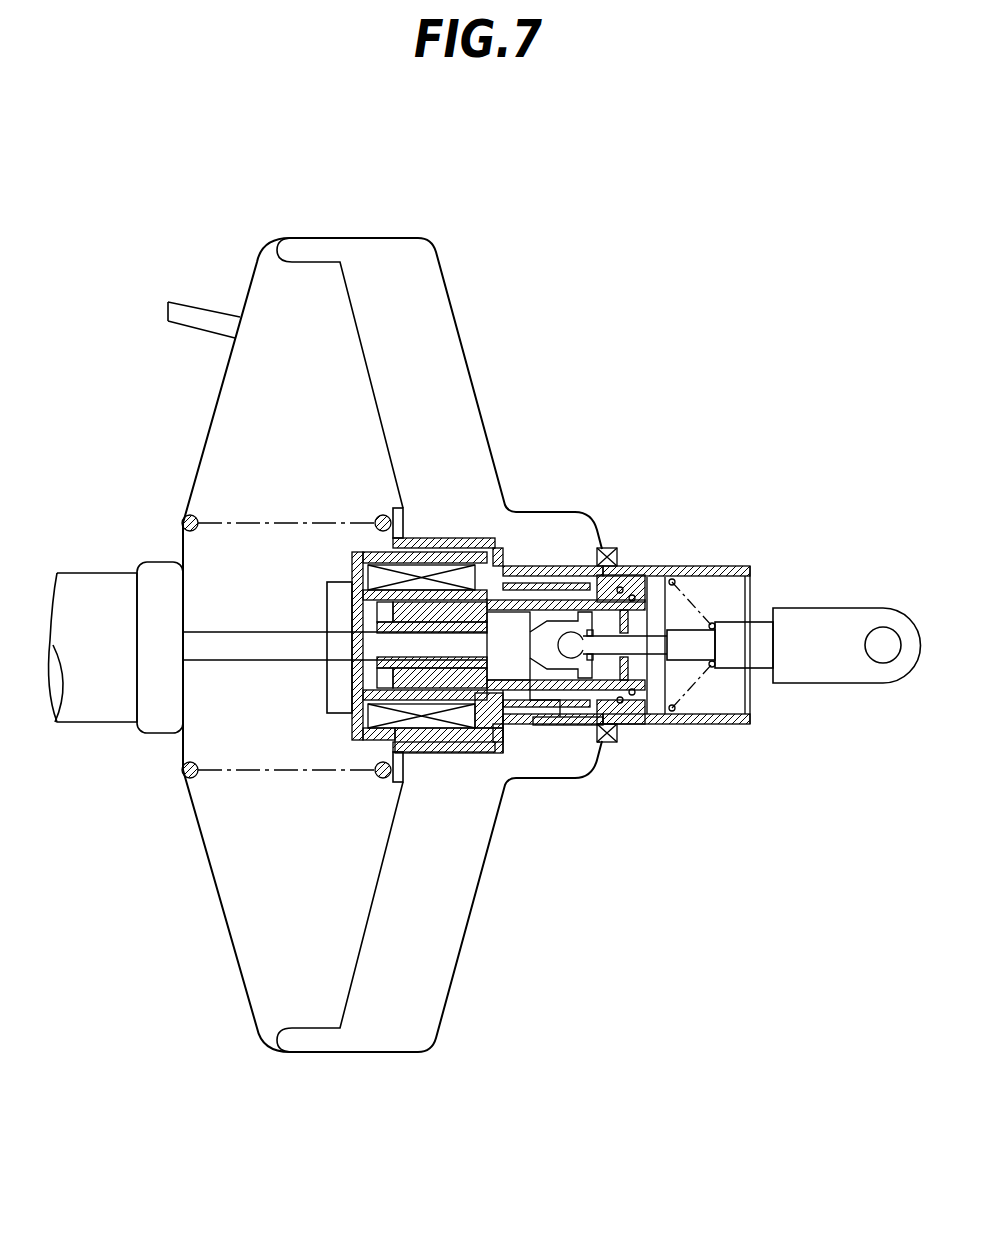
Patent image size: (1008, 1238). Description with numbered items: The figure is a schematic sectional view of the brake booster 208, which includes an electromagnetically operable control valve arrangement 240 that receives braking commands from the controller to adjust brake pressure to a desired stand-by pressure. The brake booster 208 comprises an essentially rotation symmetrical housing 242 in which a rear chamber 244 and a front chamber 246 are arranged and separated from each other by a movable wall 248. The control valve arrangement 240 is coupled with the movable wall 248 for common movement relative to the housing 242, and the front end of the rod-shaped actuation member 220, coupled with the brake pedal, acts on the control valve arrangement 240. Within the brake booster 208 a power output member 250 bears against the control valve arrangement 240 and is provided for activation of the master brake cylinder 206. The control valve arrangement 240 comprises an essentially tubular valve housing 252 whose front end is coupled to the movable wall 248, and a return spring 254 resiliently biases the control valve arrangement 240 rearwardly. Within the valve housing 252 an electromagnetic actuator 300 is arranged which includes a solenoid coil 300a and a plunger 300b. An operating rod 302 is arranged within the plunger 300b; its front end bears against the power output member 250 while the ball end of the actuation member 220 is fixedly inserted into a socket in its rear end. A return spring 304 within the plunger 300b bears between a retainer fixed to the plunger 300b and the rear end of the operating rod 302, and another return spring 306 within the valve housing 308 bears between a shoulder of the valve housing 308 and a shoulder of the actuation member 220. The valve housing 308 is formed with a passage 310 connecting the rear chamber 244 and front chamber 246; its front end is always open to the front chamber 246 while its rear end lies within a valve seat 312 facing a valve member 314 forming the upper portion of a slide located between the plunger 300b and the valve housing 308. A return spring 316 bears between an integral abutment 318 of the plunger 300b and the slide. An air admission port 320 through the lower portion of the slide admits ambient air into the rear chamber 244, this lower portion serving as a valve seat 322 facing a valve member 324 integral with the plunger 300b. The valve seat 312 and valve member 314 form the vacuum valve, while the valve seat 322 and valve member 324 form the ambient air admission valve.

The master brake cylinder 206 is at (82, 590).
The brake booster 208 is at (558, 256).
The rod-shaped actuation member 220 is at (838, 610).
The control valve arrangement 240 is at (663, 533).
The housing 242 is at (350, 237).
The rear chamber 244 is at (425, 287).
The front chamber 246 is at (240, 400).
The movable wall 248 is at (372, 940).
The power output member 250 is at (190, 648).
The valve housing 252 is at (500, 643).
The return spring 254 is at (186, 517).
The electromagnetic actuator 300 is at (477, 340).
The solenoid coil 300a is at (415, 562).
The plunger 300b is at (550, 580).
The operating rod 302 is at (540, 600).
The return spring 304 is at (657, 700).
The return spring 306 is at (712, 727).
The valve housing 308 is at (463, 753).
The passage 310 is at (591, 580).
The valve seat 312 is at (612, 548).
The valve member 314 is at (641, 578).
The return spring 316 is at (650, 592).
The integral abutment 318 is at (668, 580).
The air admission port 320 is at (605, 742).
The valve seat 322 is at (633, 744).
The valve member 324 is at (578, 700).